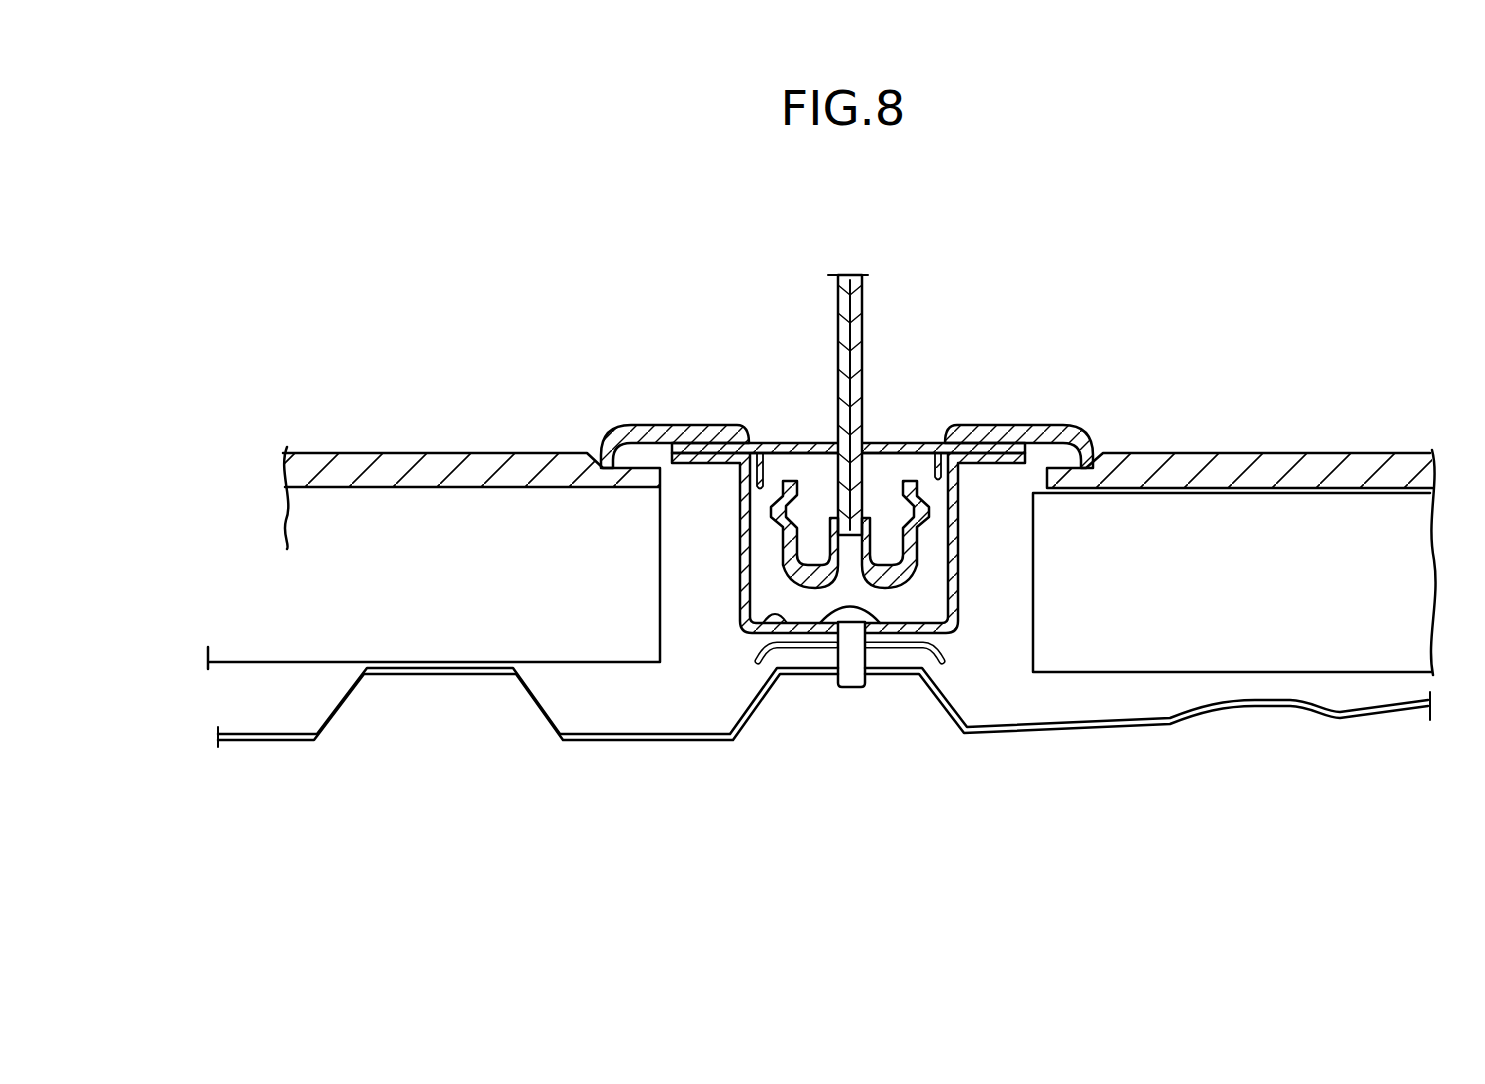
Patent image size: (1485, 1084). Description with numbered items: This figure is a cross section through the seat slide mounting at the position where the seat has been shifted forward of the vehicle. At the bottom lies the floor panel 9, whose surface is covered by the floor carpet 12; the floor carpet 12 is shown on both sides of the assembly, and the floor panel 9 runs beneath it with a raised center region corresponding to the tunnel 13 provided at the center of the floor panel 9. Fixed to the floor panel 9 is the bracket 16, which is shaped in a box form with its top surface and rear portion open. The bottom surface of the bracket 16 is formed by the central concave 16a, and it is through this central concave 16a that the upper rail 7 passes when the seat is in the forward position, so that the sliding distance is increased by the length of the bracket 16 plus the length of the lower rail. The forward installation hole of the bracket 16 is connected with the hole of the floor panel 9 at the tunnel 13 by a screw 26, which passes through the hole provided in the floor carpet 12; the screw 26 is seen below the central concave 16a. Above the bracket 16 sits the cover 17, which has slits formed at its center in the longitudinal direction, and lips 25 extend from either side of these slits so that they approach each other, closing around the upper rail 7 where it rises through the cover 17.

The upper rail 7 is at (866, 300).
The floor carpet 12 is at (465, 451).
The cover 17 is at (911, 442).
The lips 25 is at (1043, 423).
The bracket 16 is at (956, 607).
The central concave 16a is at (750, 618).
The tunnel 13 is at (868, 675).
The screw 26 is at (847, 686).
The floor panel 9 is at (1138, 724).